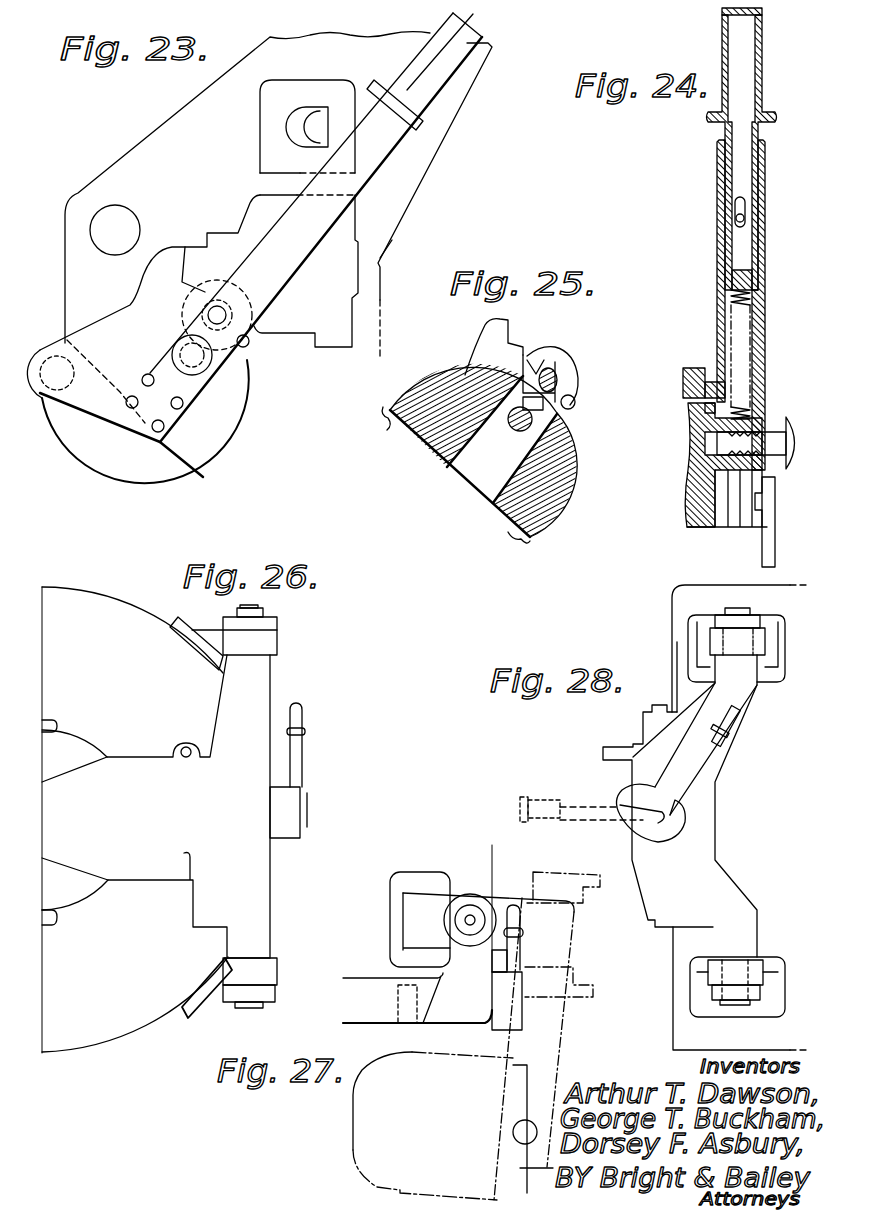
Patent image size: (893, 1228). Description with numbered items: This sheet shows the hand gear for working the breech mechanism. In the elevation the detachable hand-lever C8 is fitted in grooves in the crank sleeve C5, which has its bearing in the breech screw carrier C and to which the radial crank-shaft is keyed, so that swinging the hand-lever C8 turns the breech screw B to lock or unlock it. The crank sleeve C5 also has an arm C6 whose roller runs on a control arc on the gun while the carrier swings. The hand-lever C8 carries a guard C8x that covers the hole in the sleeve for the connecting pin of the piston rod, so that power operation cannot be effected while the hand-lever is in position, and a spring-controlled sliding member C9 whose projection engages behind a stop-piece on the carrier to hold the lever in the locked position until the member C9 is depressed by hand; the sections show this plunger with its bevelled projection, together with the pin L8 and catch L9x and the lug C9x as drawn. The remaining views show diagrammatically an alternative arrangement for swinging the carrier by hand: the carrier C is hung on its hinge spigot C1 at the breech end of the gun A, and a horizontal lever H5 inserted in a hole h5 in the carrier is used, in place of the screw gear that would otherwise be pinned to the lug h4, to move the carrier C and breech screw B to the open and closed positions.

In FIG. 23, the breech screw carrier C is at (157, 157).
In FIG. 26, the breech screw carrier C is at (207, 811).
In FIG. 27, the breech screw carrier C is at (363, 1013).
In FIG. 28, the breech screw carrier C is at (692, 853).
In FIG. 28, the hinge spigot C1 is at (743, 642).
In FIG. 23, the crank sleeve C5 is at (203, 457).
In FIG. 24, the crank sleeve C5 is at (700, 503).
In FIG. 25, the crank sleeve C5 is at (553, 481).
In FIG. 26, the arm C6 is at (297, 757).
In FIG. 27, the arm C6 is at (525, 947).
In FIG. 23, the hand-lever C8 is at (368, 168).
In FIG. 24, the hand-lever C8 is at (765, 228).
In FIG. 28, the hand-lever C8 is at (710, 750).
In FIG. 23, the guard C8x is at (47, 350).
In FIG. 24, the guard C8x is at (775, 540).
In FIG. 23, the spring-controlled sliding member C9 is at (262, 317).
In FIG. 24, the spring-controlled sliding member C9 is at (720, 320).
In FIG. 23, the stop lug C9x is at (178, 289).
In FIG. 23, the lug h4 is at (90, 480).
In FIG. 28, the lug h4 is at (726, 726).
In FIG. 24, the hole h5 is at (717, 347).
In FIG. 26, the hole h5 is at (185, 745).
In FIG. 27, the hole h5 is at (410, 1027).
In FIG. 27, the horizontal lever H5 is at (580, 997).
In FIG. 28, the horizontal lever H5 is at (590, 805).
In FIG. 25, the pin L8 is at (513, 432).
In FIG. 25, the catch L9x is at (540, 352).
In FIG. 26, the breech end of the gun A is at (83, 600).
In FIG. 27, the breech end of the gun A is at (367, 965).
In FIG. 28, the breech end of the gun A is at (677, 620).
In FIG. 26, the breech screw B is at (72, 743).
In FIG. 27, the breech screw B is at (368, 1138).